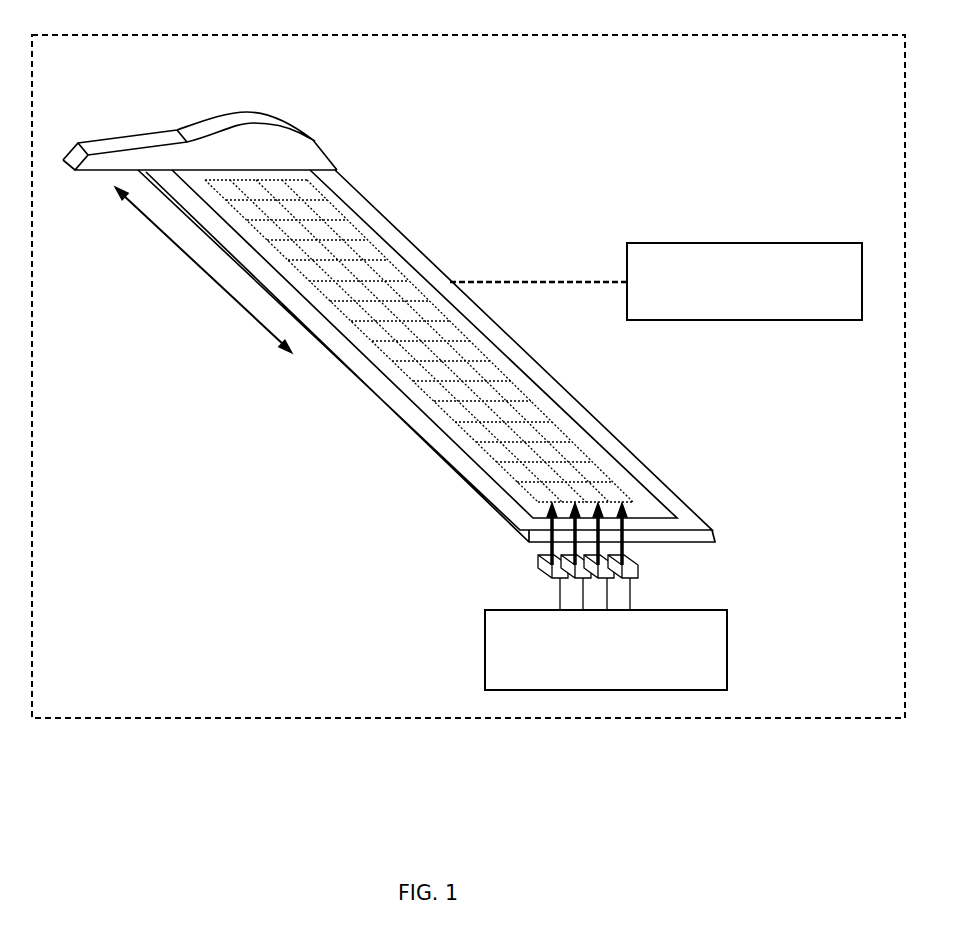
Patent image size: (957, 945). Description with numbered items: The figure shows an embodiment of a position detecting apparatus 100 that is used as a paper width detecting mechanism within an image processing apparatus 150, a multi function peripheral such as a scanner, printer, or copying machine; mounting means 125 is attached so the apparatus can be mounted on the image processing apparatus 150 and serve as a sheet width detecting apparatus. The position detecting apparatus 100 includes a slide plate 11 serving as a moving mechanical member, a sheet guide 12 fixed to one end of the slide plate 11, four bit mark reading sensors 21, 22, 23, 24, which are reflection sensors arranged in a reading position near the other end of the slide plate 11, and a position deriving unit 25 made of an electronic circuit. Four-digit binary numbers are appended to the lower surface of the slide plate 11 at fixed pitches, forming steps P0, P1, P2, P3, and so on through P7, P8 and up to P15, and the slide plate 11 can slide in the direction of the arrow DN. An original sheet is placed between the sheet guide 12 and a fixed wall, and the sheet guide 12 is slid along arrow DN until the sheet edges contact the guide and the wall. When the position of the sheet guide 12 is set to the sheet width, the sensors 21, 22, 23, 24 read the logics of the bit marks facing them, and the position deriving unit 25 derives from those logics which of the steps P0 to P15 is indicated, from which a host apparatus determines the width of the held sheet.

The position detecting apparatus 100 is at (416, 136).
The slide plate 11 is at (358, 378).
The sheet guide 12 is at (300, 138).
The bit mark reading sensor 21 is at (626, 560).
The bit mark reading sensor 22 is at (618, 581).
The bit mark reading sensor 23 is at (572, 581).
The bit mark reading sensor 24 is at (537, 563).
The position deriving unit 25 is at (485, 646).
The mounting means 125 is at (656, 281).
The image processing apparatus 150 is at (468, 362).
The arrow direction DN is at (178, 250).
The step P0 is at (352, 182).
The step P1 is at (373, 202).
The step P2 is at (393, 222).
The step P3 is at (413, 242).
The step P7 is at (497, 320).
The step P8 is at (520, 340).
The step P15 is at (700, 498).